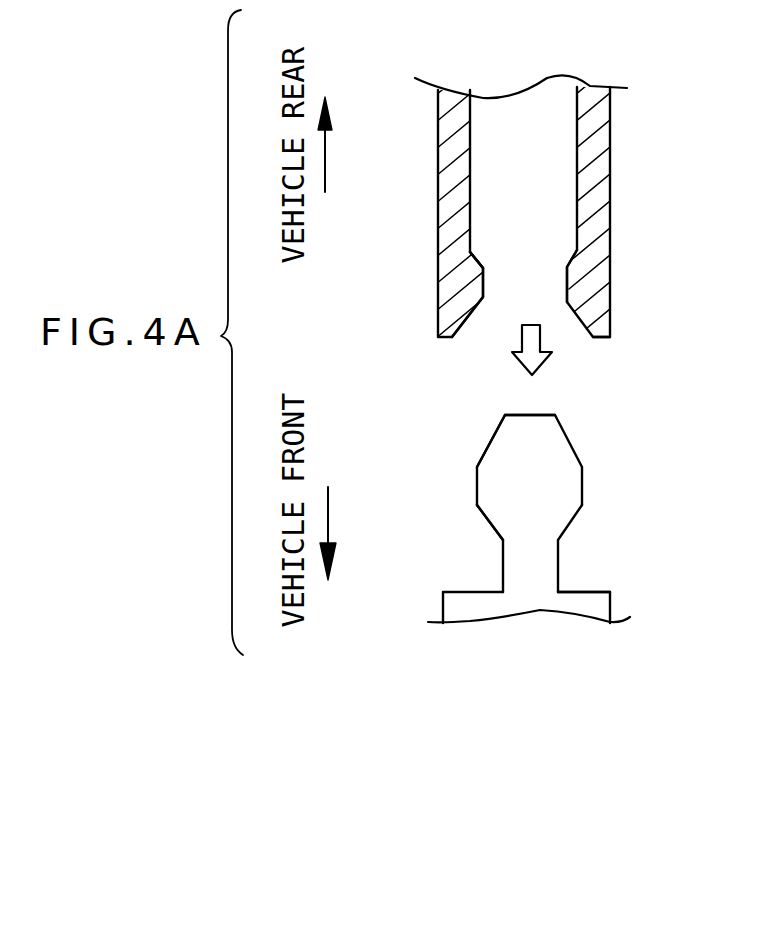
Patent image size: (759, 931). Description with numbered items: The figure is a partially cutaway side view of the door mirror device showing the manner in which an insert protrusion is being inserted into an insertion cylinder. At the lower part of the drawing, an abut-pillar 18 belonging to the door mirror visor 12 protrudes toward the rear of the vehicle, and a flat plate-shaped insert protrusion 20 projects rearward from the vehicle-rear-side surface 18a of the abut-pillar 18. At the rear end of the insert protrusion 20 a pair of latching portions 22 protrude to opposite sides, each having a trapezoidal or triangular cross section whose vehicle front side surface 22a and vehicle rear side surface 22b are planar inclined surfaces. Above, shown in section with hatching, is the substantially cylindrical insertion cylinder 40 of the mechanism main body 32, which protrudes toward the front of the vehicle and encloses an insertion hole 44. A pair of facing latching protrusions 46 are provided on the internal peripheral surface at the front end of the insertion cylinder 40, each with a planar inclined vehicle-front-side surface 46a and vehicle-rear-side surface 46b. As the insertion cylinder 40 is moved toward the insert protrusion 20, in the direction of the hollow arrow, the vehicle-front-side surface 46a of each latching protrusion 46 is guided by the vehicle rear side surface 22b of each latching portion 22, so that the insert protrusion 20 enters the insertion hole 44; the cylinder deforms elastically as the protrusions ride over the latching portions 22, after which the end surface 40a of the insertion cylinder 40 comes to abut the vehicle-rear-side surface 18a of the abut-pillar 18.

The insertion cylinder 40 is at (437, 153).
The mechanism main body 32 is at (487, 197).
The insertion hole 44 is at (580, 106).
The latching protrusion 46 is at (485, 285).
The vehicle-rear-side surface 46b is at (482, 248).
The vehicle-front-side surface 46a is at (474, 322).
The vehicle-front-side surface 40a is at (603, 337).
The insert protrusion 20 is at (545, 413).
The latching portion 22 is at (484, 497).
The vehicle rear side surface 22b is at (487, 445).
The vehicle front side surface 22a is at (490, 528).
The abut-pillar 18 is at (614, 620).
The door mirror visor 12 is at (580, 592).
The vehicle-rear-side surface 18a is at (583, 592).